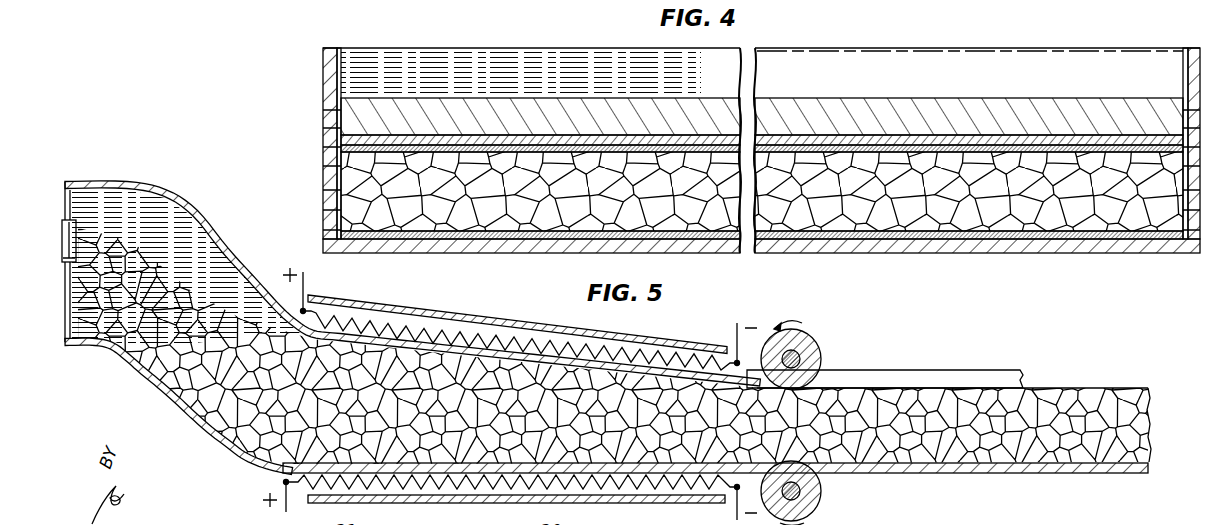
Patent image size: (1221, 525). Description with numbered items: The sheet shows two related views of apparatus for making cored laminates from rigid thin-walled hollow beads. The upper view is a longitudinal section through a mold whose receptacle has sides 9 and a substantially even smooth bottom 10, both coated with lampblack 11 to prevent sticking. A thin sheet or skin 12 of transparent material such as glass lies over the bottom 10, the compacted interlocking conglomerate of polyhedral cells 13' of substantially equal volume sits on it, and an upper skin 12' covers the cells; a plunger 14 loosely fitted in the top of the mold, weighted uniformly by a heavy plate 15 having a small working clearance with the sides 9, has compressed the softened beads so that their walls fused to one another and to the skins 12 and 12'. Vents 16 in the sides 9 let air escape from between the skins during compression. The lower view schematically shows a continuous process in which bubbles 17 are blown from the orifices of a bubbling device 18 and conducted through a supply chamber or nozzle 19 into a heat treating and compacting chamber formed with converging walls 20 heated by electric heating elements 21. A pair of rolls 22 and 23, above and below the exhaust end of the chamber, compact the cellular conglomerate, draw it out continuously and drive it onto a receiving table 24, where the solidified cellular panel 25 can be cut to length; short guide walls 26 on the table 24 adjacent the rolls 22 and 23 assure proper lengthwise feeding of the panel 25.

In FIG. 4, the sides 9 is at (330, 70).
In FIG. 4, the bottom 10 is at (978, 245).
In FIG. 4, the lampblack 11 is at (1183, 58).
In FIG. 4, the thin sheet or skin 12 is at (515, 241).
In FIG. 4, the thin sheet or skin 12' is at (511, 156).
In FIG. 4, the polyhedral cells 13' is at (513, 191).
In FIG. 4, the plunger 14 is at (1072, 143).
In FIG. 4, the heavy plate 15 is at (995, 116).
In FIG. 4, the vents 16 is at (330, 128).
In FIG. 5, the bubbles 17 is at (148, 346).
In FIG. 5, the bubbling device 18 is at (78, 224).
In FIG. 5, the supply chamber or nozzle 19 is at (192, 428).
In FIG. 5, the converging walls 20 is at (500, 348).
In FIG. 5, the electric heating elements 21 is at (403, 325).
In FIG. 5, the roll 22 is at (812, 337).
In FIG. 5, the roll 23 is at (822, 500).
In FIG. 5, the receiving table 24 is at (980, 464).
In FIG. 5, the cellular panel 25 is at (1053, 398).
In FIG. 5, the guide walls 26 is at (925, 378).